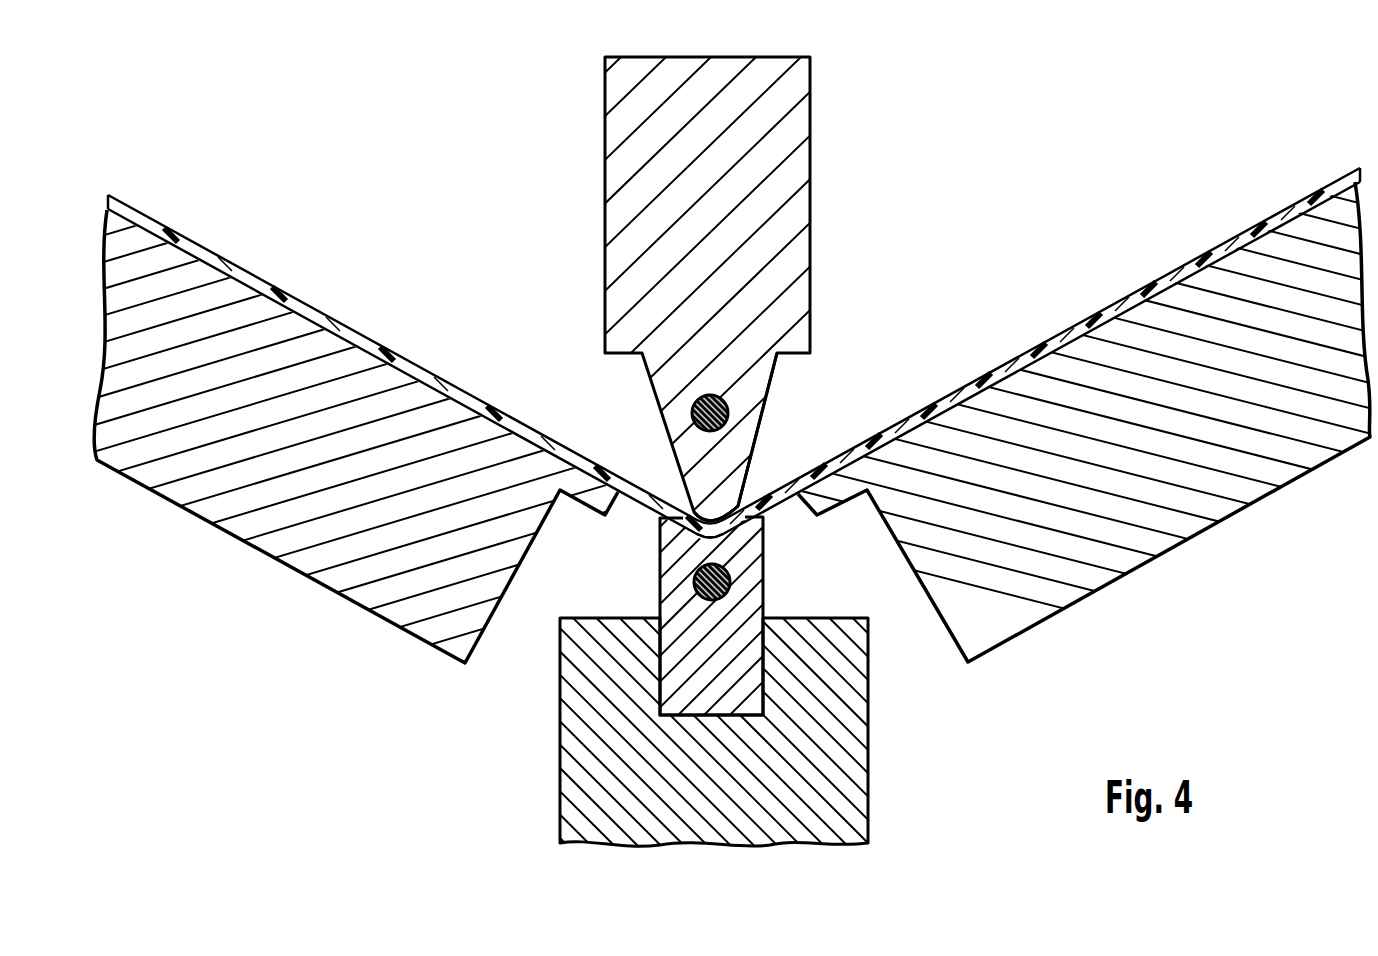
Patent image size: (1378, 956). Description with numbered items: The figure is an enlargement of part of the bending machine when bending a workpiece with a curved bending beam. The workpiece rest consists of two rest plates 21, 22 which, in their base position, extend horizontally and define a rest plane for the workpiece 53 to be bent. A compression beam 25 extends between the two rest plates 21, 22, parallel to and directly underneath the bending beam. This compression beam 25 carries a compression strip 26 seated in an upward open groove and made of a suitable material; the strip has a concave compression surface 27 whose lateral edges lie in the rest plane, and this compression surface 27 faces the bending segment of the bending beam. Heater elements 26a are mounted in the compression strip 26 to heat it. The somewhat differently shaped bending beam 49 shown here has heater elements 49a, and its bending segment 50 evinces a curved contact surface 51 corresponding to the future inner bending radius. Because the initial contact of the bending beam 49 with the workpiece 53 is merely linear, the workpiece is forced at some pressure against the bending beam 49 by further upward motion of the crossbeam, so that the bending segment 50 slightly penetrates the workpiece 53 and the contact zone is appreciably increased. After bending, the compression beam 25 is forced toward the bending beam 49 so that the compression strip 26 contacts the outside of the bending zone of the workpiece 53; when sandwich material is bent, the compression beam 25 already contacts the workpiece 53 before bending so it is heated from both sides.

The rest plate 21 is at (283, 570).
The rest plate 22 is at (1115, 588).
The compression beam 25 is at (868, 738).
The compression strip 26 is at (748, 640).
The heater elements 26a is at (696, 583).
The compression surface 27 is at (695, 528).
The bending beam 49 is at (810, 253).
The heater elements 49a is at (724, 405).
The bending segment 50 is at (745, 455).
The curved contact surface 51 is at (734, 538).
The workpiece 53 is at (997, 368).